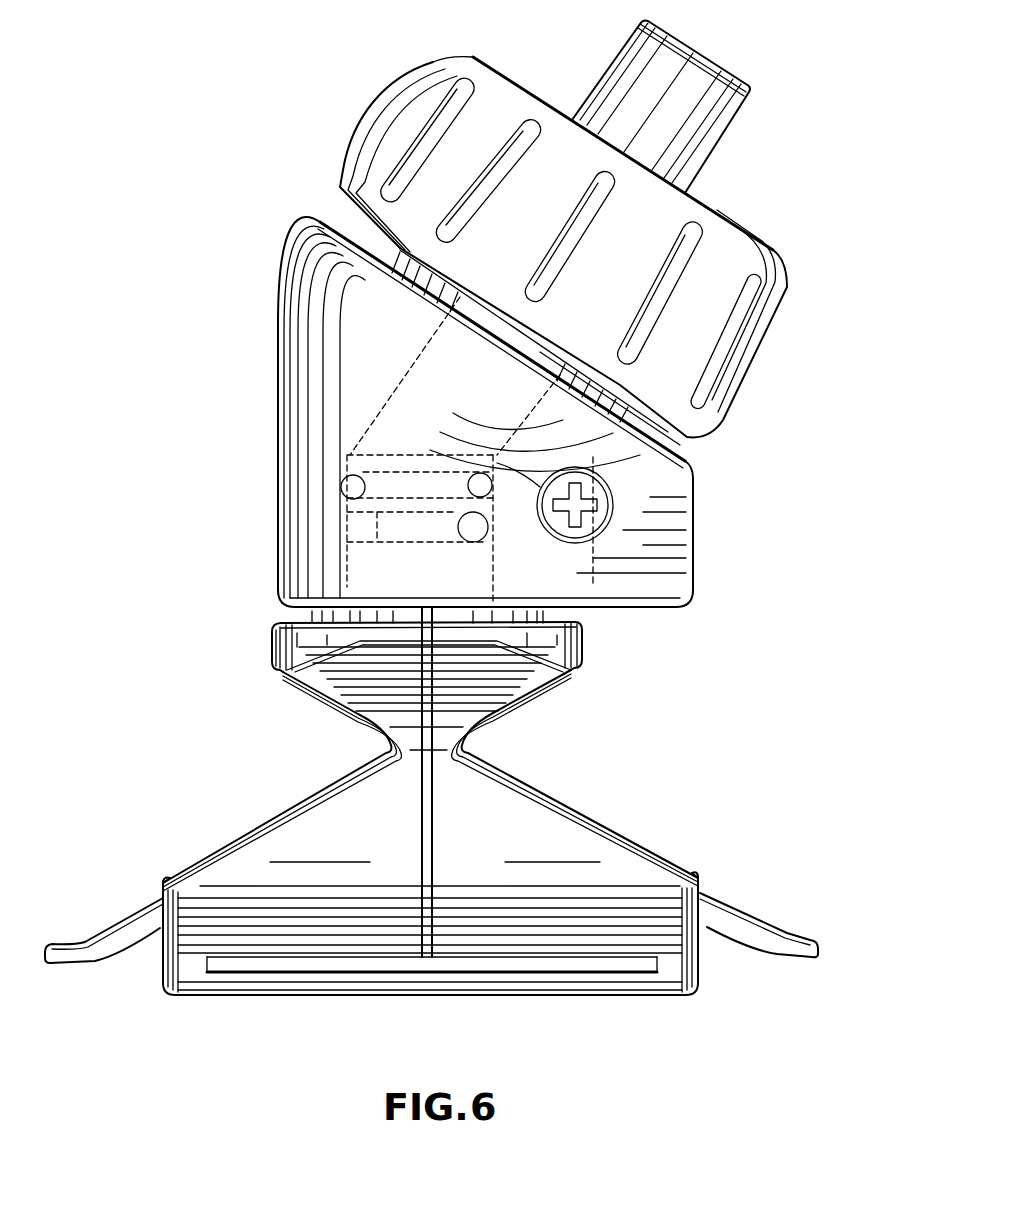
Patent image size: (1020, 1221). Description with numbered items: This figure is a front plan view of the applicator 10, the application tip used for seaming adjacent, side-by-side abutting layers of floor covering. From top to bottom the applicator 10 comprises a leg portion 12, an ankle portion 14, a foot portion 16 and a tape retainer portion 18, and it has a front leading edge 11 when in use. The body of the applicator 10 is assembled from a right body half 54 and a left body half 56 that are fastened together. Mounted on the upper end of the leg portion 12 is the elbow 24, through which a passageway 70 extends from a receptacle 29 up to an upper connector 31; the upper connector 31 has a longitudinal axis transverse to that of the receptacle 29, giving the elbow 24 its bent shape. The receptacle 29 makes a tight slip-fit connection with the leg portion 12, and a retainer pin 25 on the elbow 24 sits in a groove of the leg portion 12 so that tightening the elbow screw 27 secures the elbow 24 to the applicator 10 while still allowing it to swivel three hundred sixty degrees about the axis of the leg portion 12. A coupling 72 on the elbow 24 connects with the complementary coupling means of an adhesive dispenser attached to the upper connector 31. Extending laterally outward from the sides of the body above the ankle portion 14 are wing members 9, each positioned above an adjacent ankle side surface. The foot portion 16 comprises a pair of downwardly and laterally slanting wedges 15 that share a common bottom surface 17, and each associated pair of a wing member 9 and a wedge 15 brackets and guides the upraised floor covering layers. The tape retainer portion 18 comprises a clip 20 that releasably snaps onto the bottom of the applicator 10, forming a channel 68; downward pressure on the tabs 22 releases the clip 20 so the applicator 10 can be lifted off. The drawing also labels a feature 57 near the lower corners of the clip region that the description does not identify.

The wing member 9 is at (270, 637).
The applicator 10 is at (652, 737).
The front leading edge 11 is at (460, 930).
The leg portion 12 is at (347, 508).
The ankle portion 14 is at (504, 744).
The wedge 15 is at (287, 814).
The foot portion 16 is at (703, 878).
The bottom surface 17 is at (530, 957).
The tape retainer portion 18 is at (323, 995).
The clip 20 is at (275, 982).
The tab 22 is at (113, 942).
The elbow 24 is at (280, 293).
The retainer pin 25 is at (473, 541).
The elbow screw 27 is at (617, 500).
The receptacle 29 is at (497, 577).
The upper connector 31 is at (612, 63).
The right body half 54 is at (230, 873).
The left body half 56 is at (620, 862).
The side wall 57 is at (165, 960).
The channel 68 is at (403, 958).
The passageway 70 is at (690, 48).
The coupling 72 is at (370, 127).